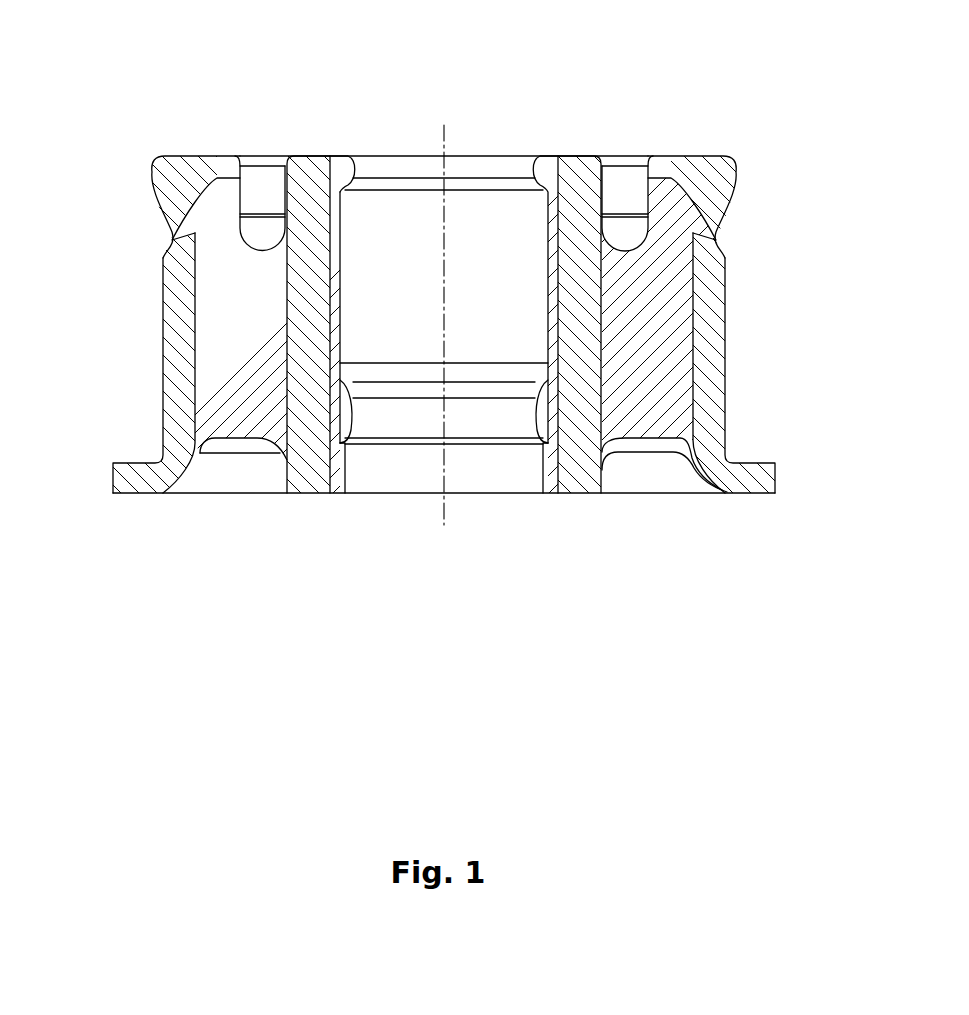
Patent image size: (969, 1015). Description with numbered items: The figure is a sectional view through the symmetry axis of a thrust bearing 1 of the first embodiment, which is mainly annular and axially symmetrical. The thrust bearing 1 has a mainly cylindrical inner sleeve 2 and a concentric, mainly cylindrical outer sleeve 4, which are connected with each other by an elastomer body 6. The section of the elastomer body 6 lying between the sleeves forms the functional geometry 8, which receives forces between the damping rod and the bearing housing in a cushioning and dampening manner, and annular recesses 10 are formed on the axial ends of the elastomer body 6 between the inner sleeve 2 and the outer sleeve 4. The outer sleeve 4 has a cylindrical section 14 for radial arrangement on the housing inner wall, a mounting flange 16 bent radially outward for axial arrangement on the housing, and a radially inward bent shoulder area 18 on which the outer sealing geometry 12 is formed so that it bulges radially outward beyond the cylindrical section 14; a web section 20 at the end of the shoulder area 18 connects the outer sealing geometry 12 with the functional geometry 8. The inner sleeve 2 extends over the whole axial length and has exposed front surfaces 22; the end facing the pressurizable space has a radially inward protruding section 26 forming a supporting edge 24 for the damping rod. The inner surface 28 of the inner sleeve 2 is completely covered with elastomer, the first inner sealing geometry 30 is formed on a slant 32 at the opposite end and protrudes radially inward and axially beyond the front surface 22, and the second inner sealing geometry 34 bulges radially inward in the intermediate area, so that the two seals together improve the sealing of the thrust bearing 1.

The thrust bearing 1 is at (140, 33).
The inner sleeve 2 is at (590, 410).
The outer sleeve 4 is at (710, 307).
The elastomer body 6 is at (687, 378).
The functional geometry 8 is at (655, 342).
The annular recess 10 is at (620, 195).
The outer sealing geometry 12 is at (722, 175).
The cylindrical section 14 is at (715, 334).
The mounting flange 16 is at (757, 480).
The shoulder area 18 is at (685, 212).
The web section 20 is at (237, 192).
The front surface 22 is at (310, 156).
The supporting edge 24 is at (338, 493).
The radially inward protruding section 26 is at (338, 475).
The inner surface 28 is at (340, 303).
The first inner sealing geometry 30 is at (547, 156).
The slant 32 is at (332, 156).
The second inner sealing geometry 34 is at (543, 413).